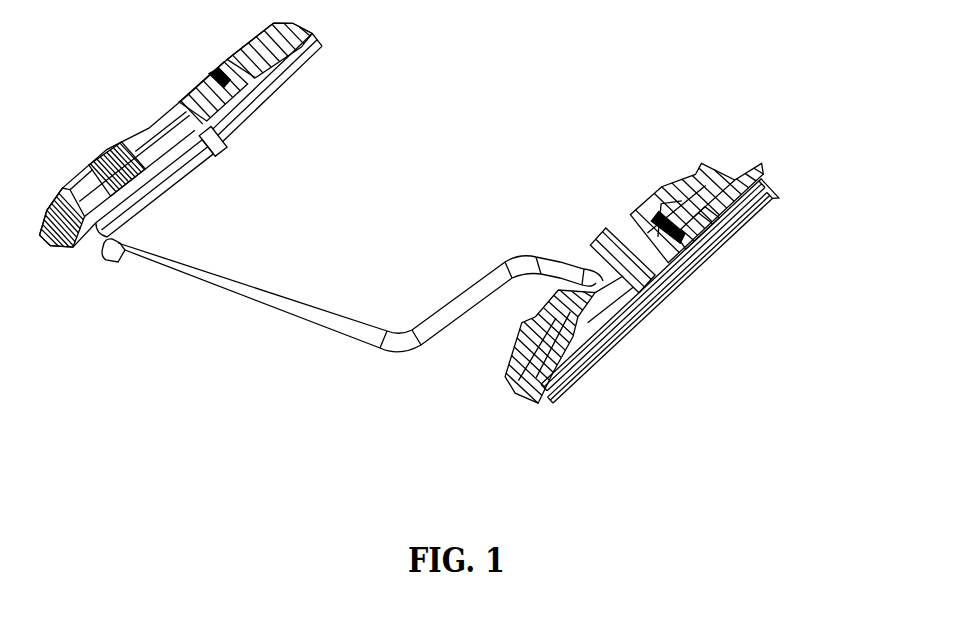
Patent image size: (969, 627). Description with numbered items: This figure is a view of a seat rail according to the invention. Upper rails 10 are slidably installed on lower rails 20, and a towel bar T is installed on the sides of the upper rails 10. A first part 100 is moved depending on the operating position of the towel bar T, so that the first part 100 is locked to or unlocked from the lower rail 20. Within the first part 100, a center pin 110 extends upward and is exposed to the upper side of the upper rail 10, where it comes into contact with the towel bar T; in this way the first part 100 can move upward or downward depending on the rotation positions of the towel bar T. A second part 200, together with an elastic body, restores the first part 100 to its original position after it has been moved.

The first part 100 is at (685, 228).
The center pin 110 is at (682, 240).
The second part 200 is at (689, 227).
The upper rail 10 is at (618, 315).
The lower rail 20 is at (587, 370).
The towel bar T is at (263, 298).